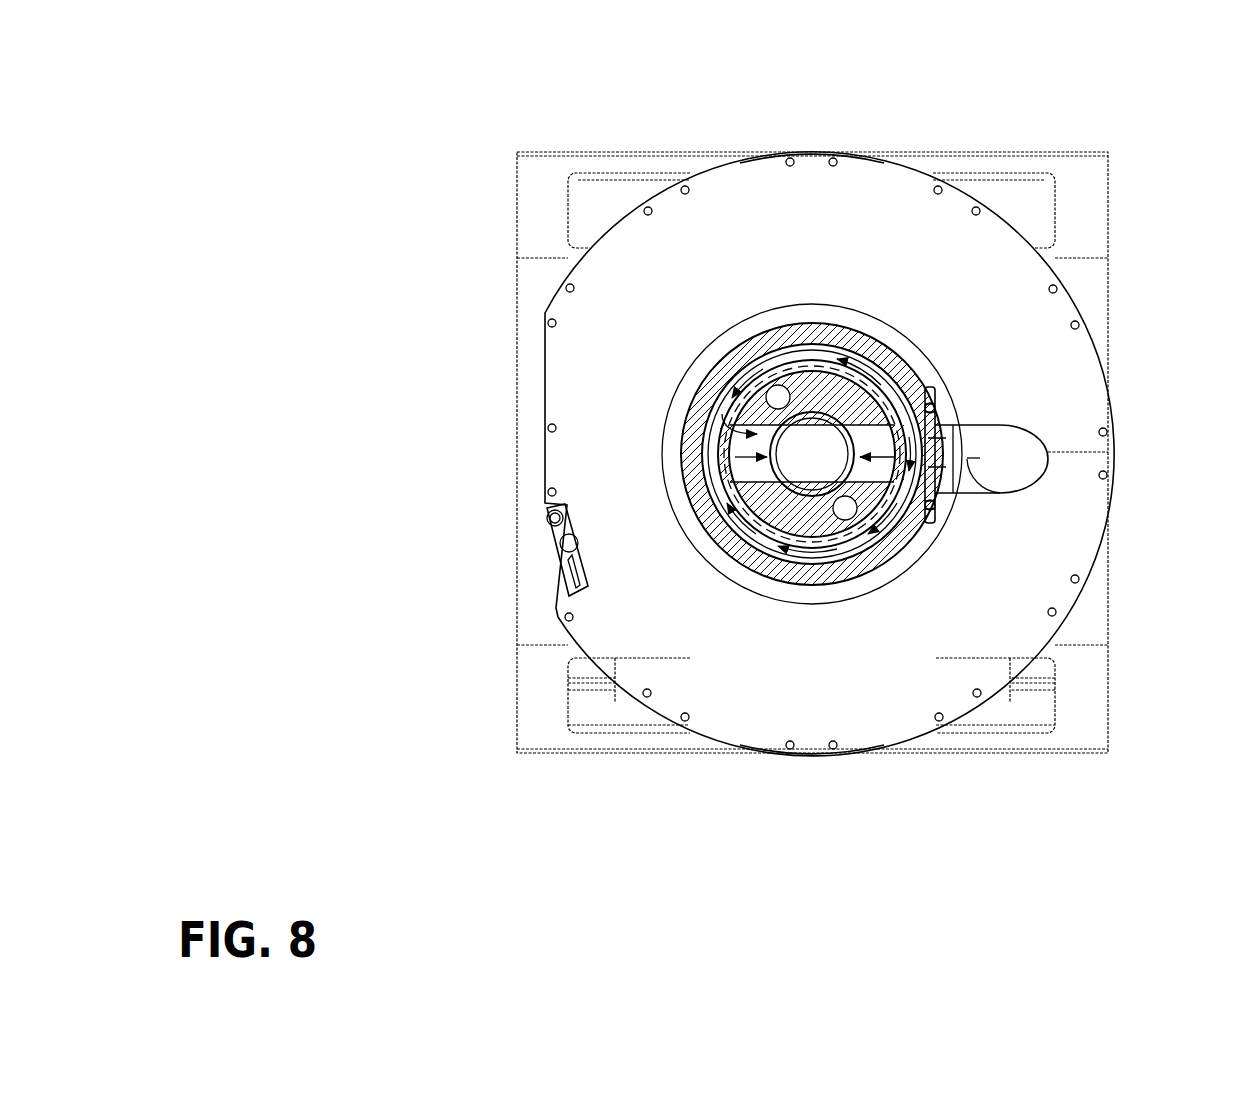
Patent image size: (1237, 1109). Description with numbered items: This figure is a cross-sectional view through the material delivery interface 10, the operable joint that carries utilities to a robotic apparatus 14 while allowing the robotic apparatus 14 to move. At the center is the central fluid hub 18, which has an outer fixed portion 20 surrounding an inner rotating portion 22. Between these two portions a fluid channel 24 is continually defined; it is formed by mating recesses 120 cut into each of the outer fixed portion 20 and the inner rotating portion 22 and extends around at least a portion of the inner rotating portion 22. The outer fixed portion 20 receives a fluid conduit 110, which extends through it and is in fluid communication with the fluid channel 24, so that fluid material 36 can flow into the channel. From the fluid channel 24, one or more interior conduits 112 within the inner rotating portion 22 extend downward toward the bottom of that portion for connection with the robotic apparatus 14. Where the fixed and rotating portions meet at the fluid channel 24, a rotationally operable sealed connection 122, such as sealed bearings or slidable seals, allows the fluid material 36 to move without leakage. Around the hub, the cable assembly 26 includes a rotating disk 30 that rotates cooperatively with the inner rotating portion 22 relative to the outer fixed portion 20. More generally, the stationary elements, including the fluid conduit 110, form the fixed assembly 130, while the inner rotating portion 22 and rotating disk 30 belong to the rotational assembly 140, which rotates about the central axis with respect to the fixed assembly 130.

The material delivery interface 10 is at (860, 138).
The robotic apparatus 14 is at (1022, 146).
The central fluid hub 18 is at (921, 577).
The outer fixed portion 20 is at (735, 548).
The inner rotating portion 22 is at (813, 397).
The fluid channel 24 is at (715, 450).
The cable assembly 26 is at (827, 761).
The rotating disk 30 is at (930, 677).
The fluid material 36 is at (1000, 494).
The fluid conduit 110 is at (1033, 434).
The interior conduit 112 is at (935, 523).
The recess 120 is at (850, 357).
The sealed connection 122 is at (818, 556).
The fixed assembly 130 is at (678, 398).
The rotational assembly 140 is at (815, 331).